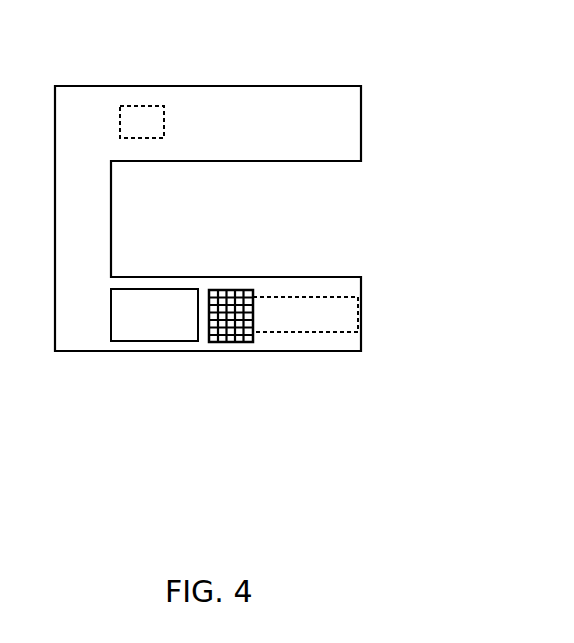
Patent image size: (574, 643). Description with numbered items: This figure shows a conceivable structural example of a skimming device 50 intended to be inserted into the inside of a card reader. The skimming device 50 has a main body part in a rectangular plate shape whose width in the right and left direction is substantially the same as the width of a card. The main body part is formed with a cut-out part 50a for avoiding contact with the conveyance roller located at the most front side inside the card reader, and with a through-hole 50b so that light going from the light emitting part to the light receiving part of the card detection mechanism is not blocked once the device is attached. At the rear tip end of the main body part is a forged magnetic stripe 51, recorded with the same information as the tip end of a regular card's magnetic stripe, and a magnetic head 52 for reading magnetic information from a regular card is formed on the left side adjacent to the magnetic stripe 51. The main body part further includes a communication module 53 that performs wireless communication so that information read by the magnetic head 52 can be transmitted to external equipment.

The skimming device 50 is at (239, 86).
The cut-out part 50a is at (340, 161).
The through-hole 50b is at (137, 341).
The forged magnetic stripe 51 is at (328, 333).
The magnetic head 52 is at (233, 342).
The communication module 53 is at (139, 106).